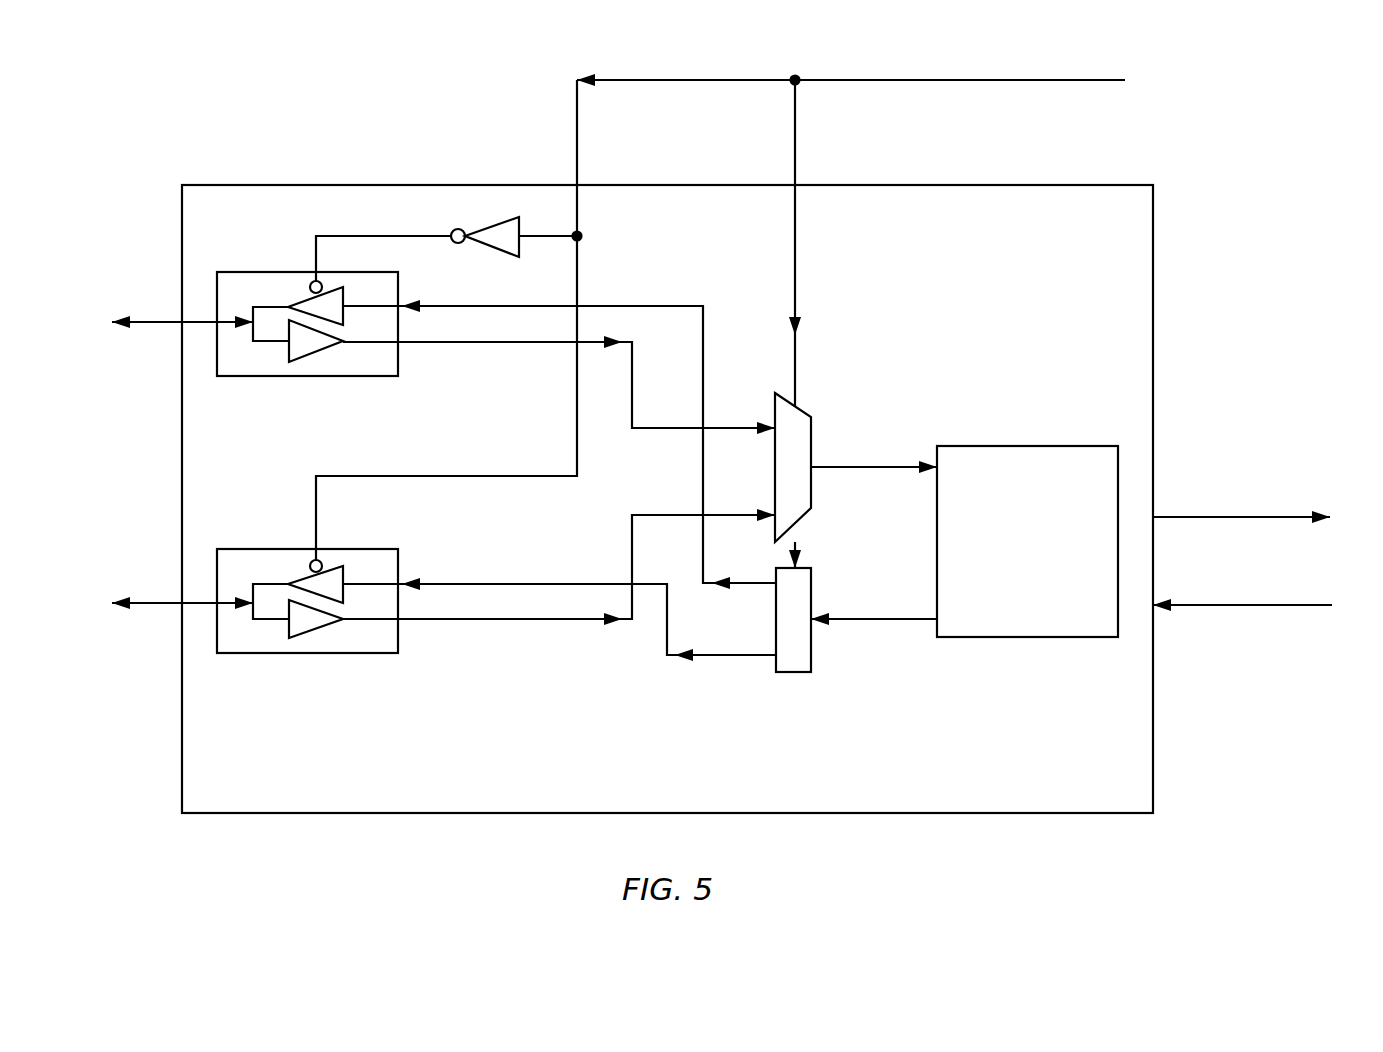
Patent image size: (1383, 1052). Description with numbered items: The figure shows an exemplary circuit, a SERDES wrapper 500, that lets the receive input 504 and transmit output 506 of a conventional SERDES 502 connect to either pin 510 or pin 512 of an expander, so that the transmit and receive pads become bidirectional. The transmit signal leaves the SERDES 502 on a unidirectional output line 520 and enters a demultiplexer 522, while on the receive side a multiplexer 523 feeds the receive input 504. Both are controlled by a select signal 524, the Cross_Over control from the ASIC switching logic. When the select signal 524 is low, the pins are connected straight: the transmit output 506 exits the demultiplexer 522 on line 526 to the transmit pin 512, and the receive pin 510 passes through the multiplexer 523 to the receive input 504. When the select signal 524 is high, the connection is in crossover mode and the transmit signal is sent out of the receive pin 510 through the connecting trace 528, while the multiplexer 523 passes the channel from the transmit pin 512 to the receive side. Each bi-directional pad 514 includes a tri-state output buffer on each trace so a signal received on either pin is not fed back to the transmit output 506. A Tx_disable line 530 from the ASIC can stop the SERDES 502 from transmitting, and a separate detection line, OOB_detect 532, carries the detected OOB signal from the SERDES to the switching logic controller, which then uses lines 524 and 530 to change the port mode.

The SERDES wrapper 500 is at (268, 130).
The SERDES 502 is at (1082, 465).
The receive input 504 is at (966, 456).
The transmit output 506 is at (957, 632).
The receive pin 510 is at (232, 324).
The transmit pin 512 is at (231, 644).
The bi-directional pad 514 is at (270, 628).
The unidirectional output line 520 is at (843, 622).
The demultiplexer 522 is at (795, 660).
The multiplexer 523 is at (802, 450).
The select signal 524 is at (922, 83).
The line 526 is at (735, 657).
The connecting trace 528 is at (612, 306).
The Tx_disable 530 is at (1266, 596).
The OOB_detect 532 is at (1267, 509).